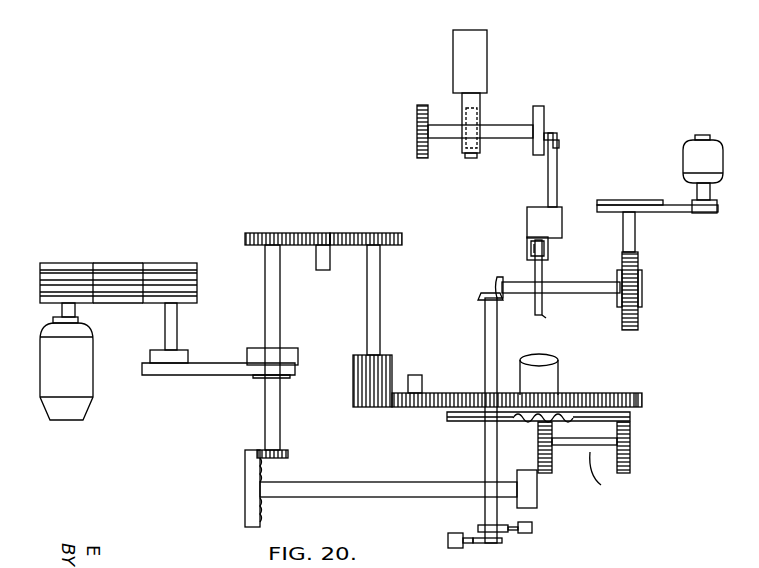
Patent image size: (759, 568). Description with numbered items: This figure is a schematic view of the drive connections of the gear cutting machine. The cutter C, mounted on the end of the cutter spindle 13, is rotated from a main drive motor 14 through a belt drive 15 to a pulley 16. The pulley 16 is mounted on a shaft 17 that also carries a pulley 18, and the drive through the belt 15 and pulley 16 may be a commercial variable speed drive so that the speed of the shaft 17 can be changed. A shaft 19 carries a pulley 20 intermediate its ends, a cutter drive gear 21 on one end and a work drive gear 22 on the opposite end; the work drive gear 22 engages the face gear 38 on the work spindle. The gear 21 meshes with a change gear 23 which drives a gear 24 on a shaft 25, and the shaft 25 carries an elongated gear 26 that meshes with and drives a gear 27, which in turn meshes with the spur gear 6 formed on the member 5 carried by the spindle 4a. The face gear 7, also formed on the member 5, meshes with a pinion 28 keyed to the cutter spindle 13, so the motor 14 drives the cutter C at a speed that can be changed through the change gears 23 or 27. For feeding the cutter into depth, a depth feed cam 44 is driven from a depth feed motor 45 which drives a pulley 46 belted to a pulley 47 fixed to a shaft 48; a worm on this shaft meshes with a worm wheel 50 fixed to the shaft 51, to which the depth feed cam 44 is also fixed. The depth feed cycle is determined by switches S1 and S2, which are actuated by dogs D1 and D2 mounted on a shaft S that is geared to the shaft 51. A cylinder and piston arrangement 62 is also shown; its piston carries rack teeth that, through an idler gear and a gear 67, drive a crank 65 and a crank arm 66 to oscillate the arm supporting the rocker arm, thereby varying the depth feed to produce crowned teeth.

The main drive motor 14 is at (85, 395).
The belt drive 15 is at (113, 270).
The pulley 16 is at (183, 266).
The shaft 17 is at (178, 326).
The pulley 18 is at (165, 377).
The shaft 19 is at (277, 310).
The pulley 20 is at (295, 352).
The cutter drive gear 21 is at (262, 236).
The work drive gear 22 is at (290, 454).
The change gear 23 is at (312, 237).
The gear 24 is at (395, 236).
The shaft 25 is at (382, 295).
The elongated gear 26 is at (358, 378).
The gear 27 is at (416, 408).
The pinion 28 is at (632, 462).
The face gear 38 is at (255, 527).
The spindle 4a is at (554, 375).
The member 5 is at (593, 398).
The spur gear 6 is at (642, 400).
The face gear 7 is at (632, 418).
The cutter spindle 13 is at (610, 474).
The cutter C is at (553, 472).
The shaft S is at (484, 462).
The depth feed cam 44 is at (542, 315).
The depth feed motor 45 is at (690, 153).
The pulley 46 is at (704, 213).
The pulley 47 is at (612, 201).
The shaft 48 is at (637, 245).
The worm wheel 50 is at (640, 318).
The shaft 51 is at (563, 283).
The cylinder and piston arrangement 62 is at (482, 46).
The crank 65 is at (541, 112).
The crank arm 66 is at (558, 168).
The gear 67 is at (417, 110).
The switch S1 is at (532, 532).
The switch S2 is at (450, 549).
The dog D1 is at (508, 530).
The dog D2 is at (472, 545).